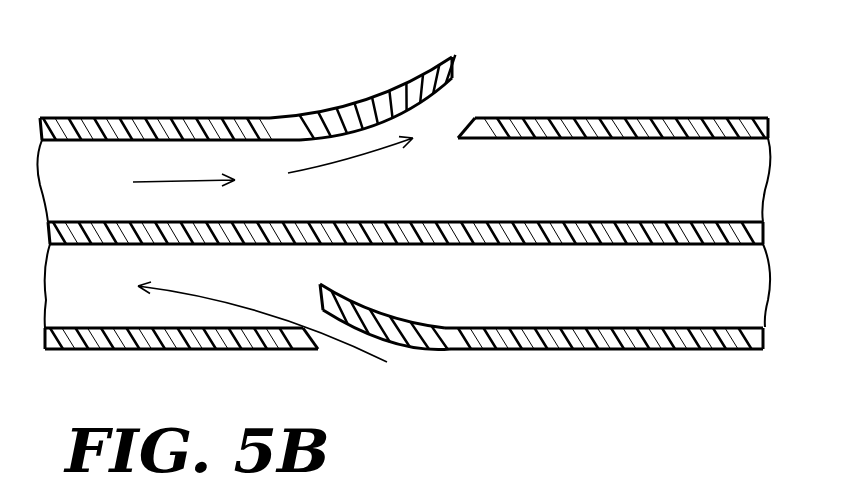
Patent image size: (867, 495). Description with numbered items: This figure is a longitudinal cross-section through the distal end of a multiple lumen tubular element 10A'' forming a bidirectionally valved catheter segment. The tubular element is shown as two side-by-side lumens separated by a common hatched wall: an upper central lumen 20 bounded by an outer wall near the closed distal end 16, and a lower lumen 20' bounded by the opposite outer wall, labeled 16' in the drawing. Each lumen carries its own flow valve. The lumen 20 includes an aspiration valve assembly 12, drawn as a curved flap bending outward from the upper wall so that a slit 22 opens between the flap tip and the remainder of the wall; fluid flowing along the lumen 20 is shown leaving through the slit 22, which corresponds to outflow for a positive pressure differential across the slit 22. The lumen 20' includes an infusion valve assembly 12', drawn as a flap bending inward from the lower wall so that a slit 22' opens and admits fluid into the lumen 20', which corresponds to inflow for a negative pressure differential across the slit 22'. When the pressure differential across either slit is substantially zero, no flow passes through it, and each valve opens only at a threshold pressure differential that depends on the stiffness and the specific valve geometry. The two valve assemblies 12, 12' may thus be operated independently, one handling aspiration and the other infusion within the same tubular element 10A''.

The multiple lumen tubular element 10A'' is at (403, 193).
The aspiration valve assembly 12 is at (380, 74).
The infusion valve assembly 12' is at (378, 351).
The distal end 16 is at (423, 110).
The lower channel wall 16' is at (423, 361).
The central lumen 20 is at (334, 163).
The lumen 20' is at (357, 313).
The slit 22 is at (506, 99).
The slit 22' is at (309, 301).